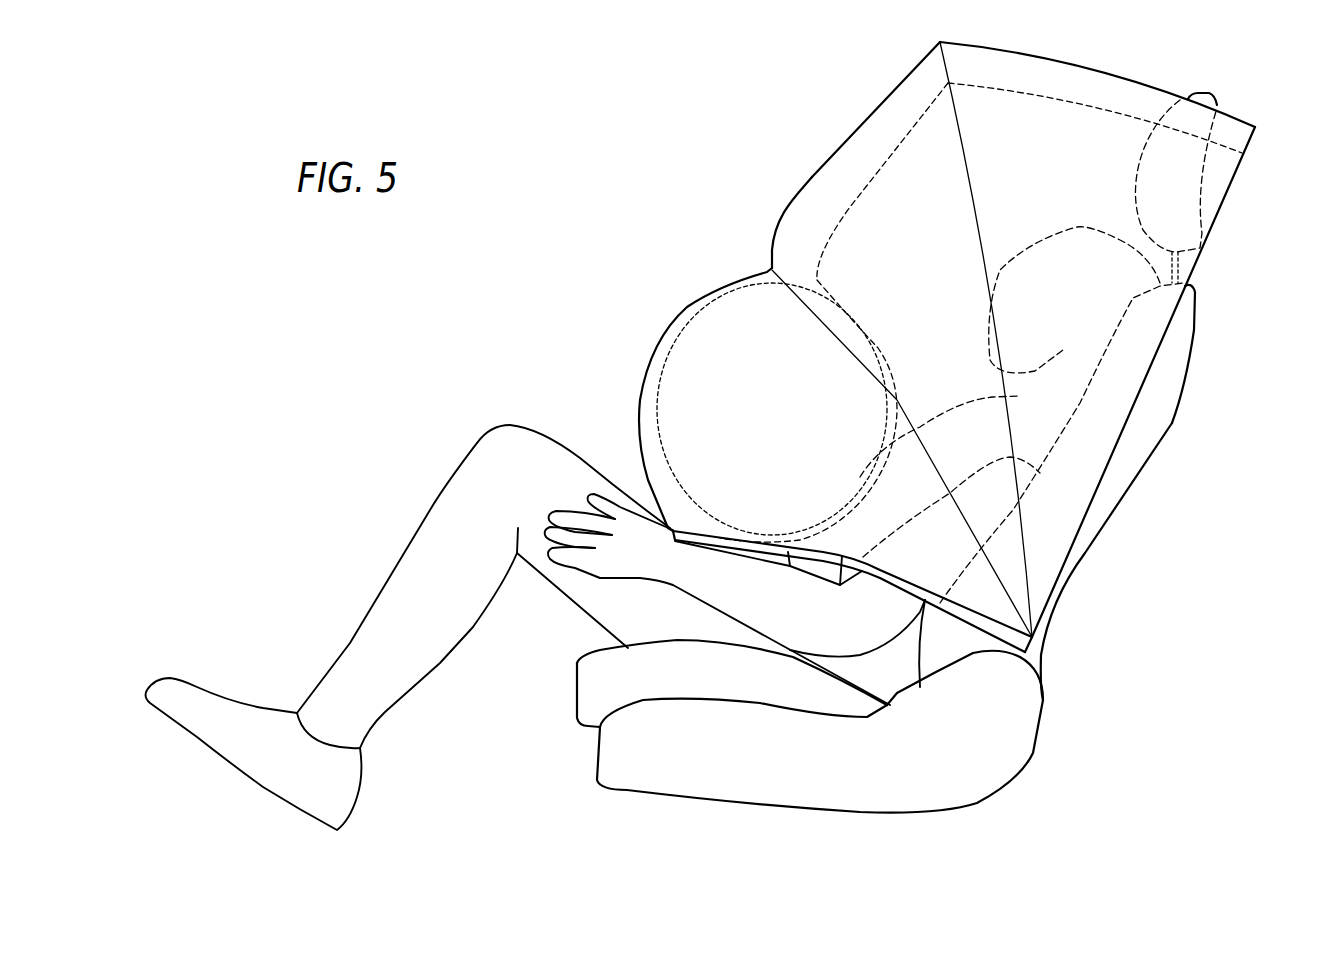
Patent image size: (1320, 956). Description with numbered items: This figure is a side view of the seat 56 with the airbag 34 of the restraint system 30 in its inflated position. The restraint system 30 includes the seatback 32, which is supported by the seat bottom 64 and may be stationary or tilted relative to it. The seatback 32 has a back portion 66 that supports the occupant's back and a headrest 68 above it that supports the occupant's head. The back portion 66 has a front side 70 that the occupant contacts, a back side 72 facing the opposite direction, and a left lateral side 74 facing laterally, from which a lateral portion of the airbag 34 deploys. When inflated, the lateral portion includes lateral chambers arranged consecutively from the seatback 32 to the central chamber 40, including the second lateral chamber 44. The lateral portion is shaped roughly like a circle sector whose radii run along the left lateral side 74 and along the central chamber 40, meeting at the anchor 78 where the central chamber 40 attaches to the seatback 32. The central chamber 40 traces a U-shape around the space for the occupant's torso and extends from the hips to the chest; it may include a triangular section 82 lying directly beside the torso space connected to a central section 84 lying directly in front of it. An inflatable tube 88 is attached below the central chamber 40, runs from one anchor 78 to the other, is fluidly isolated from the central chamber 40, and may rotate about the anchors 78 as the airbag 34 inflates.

The restraint system 30 is at (808, 88).
The seatback 32 is at (1150, 457).
The airbag 34 is at (810, 173).
The central chamber 40 is at (683, 313).
The second lateral chamber 44 is at (897, 84).
The seat 56 is at (1045, 744).
The seat bottom 64 is at (577, 690).
The back portion 66 is at (1197, 310).
The headrest 68 is at (1208, 93).
The front side 70 is at (913, 648).
The back side 72 is at (1117, 500).
The left lateral side 74 is at (1167, 382).
The anchor 78 is at (1037, 653).
The triangular section 82 is at (843, 557).
The central section 84 is at (650, 373).
The inflatable tube 88 is at (789, 558).